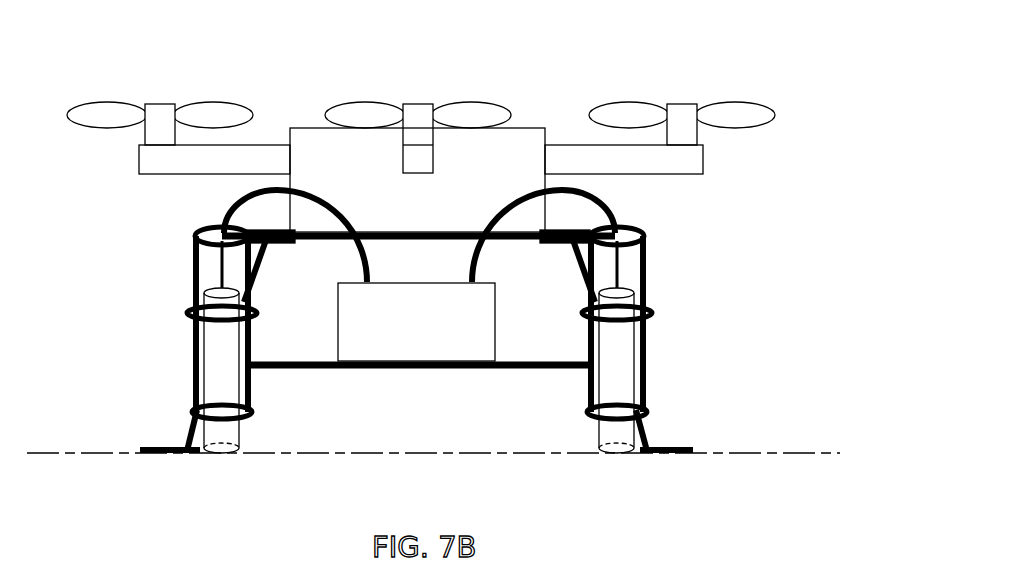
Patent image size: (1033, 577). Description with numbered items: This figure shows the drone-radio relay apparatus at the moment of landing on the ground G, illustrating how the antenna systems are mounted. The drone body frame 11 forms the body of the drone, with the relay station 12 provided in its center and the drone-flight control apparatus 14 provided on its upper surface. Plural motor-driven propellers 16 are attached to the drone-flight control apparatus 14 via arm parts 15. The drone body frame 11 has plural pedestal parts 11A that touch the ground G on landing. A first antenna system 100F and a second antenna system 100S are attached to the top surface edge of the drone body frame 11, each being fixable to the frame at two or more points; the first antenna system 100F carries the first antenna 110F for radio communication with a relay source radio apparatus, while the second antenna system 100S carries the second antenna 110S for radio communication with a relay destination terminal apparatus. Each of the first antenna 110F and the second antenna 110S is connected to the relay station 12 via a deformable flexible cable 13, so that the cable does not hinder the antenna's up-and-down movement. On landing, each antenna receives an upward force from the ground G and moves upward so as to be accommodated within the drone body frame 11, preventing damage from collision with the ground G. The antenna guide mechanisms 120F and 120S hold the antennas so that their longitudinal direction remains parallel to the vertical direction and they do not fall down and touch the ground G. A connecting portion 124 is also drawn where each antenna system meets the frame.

The motor-driven propeller 16 is at (130, 88).
The arm part 15 is at (137, 158).
The drone-flight control apparatus 14 is at (430, 223).
The flexible cable 13 is at (212, 212).
The connecting portion 124 is at (282, 248).
The relay station 12 is at (431, 341).
The drone body frame 11 is at (313, 374).
The pedestal part 11A is at (198, 437).
The first antenna system 100F is at (207, 340).
The second antenna system 100S is at (631, 340).
The antenna guide mechanism 120F is at (191, 366).
The antenna guide mechanism 120S is at (646, 358).
The first antenna 110F is at (241, 432).
The second antenna 110S is at (598, 430).
The ground G is at (103, 452).